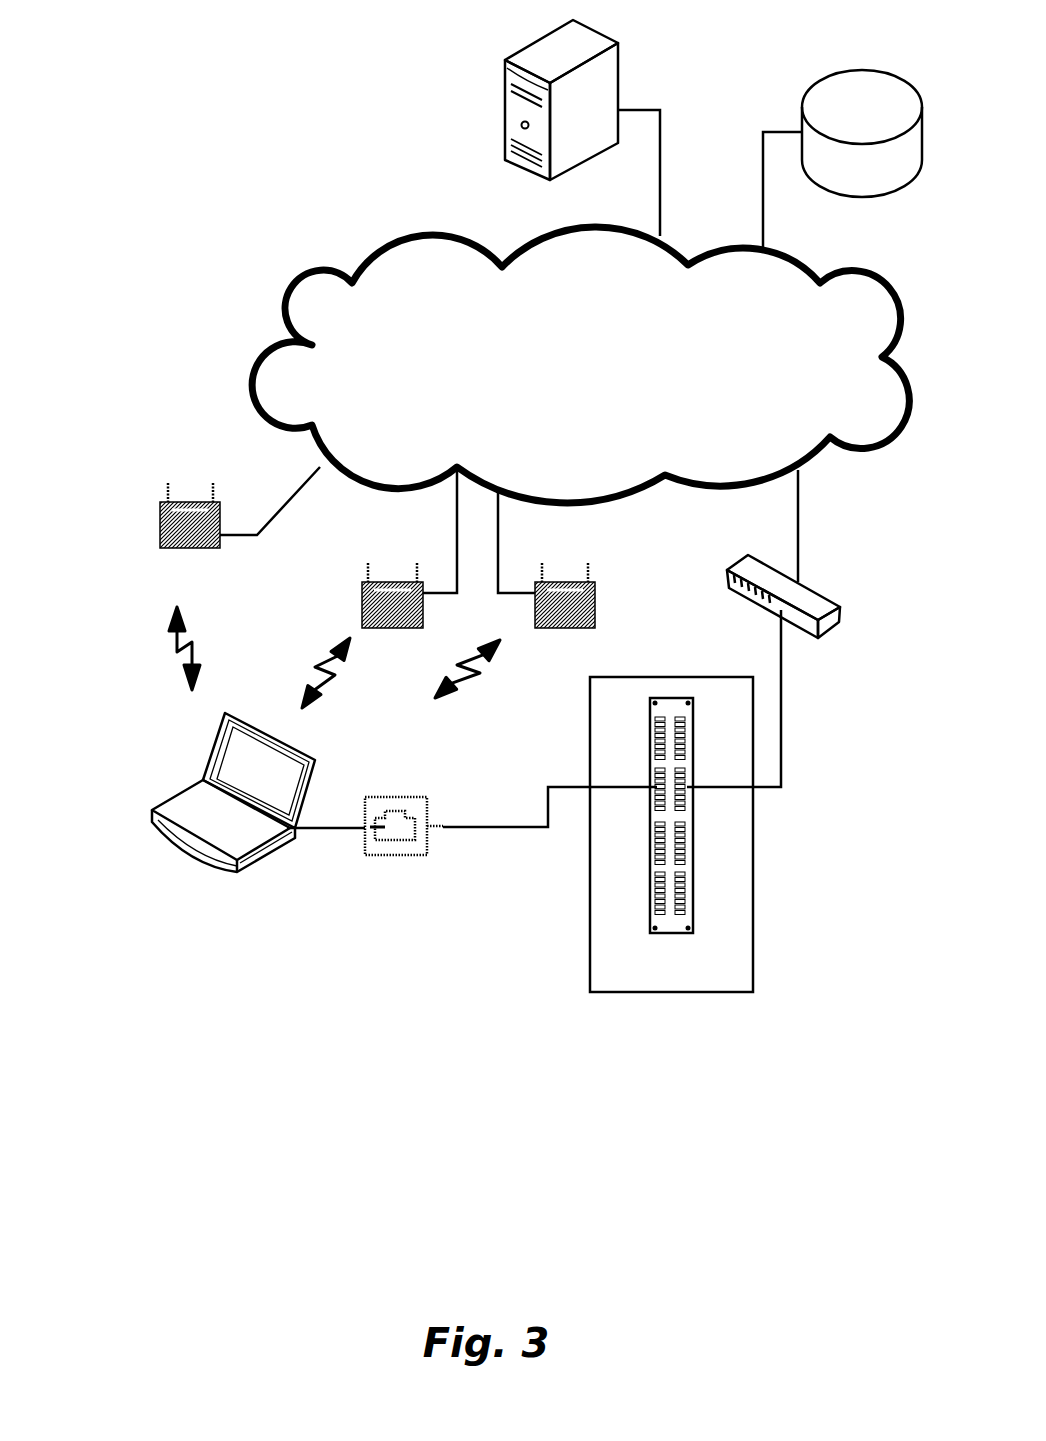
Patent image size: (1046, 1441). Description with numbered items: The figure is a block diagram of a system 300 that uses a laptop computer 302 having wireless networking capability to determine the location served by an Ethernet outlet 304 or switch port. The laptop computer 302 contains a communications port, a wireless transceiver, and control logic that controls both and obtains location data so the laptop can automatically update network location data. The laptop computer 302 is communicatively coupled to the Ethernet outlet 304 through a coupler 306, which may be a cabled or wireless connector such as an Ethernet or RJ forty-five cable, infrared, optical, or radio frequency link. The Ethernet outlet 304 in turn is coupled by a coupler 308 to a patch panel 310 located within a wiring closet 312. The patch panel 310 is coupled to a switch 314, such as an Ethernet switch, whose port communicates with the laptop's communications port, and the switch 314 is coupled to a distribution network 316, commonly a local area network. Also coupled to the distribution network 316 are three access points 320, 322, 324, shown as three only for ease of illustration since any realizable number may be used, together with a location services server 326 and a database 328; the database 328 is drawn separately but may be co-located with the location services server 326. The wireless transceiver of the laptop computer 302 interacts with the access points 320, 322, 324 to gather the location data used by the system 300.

The system 300 is at (213, 41).
The laptop computer 302 is at (152, 821).
The Ethernet outlet 304 is at (407, 797).
The coupler 306 is at (330, 830).
The coupler 308 is at (462, 828).
The patch panel 310 is at (695, 810).
The wiring closet 312 is at (753, 947).
The switch 314 is at (840, 607).
The distribution network 316 is at (740, 453).
The access point 320 is at (160, 508).
The access point 322 is at (362, 588).
The access point 324 is at (595, 590).
The location services server 326 is at (567, 126).
The database 328 is at (848, 178).